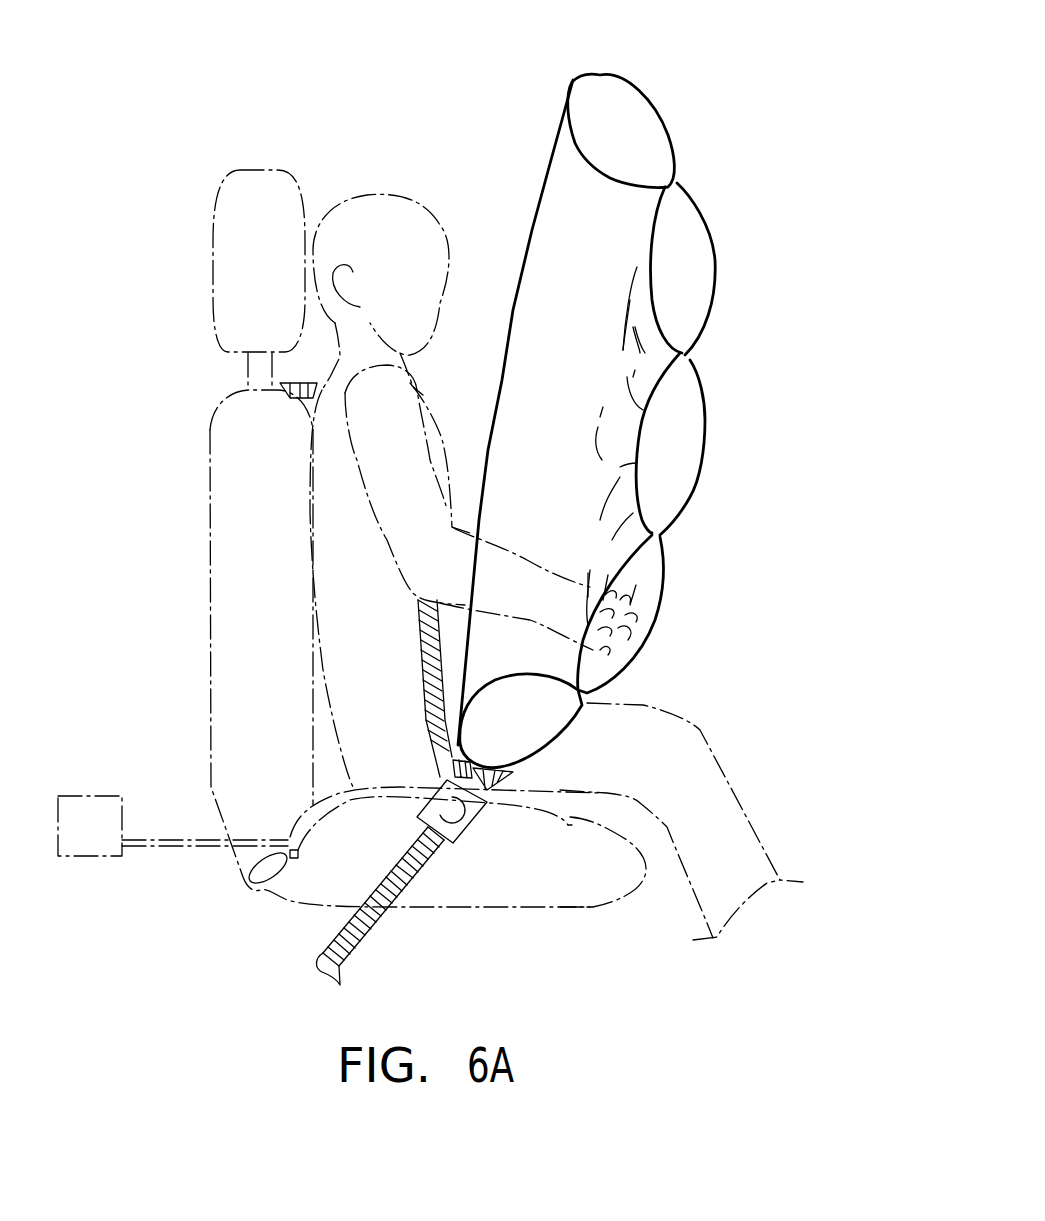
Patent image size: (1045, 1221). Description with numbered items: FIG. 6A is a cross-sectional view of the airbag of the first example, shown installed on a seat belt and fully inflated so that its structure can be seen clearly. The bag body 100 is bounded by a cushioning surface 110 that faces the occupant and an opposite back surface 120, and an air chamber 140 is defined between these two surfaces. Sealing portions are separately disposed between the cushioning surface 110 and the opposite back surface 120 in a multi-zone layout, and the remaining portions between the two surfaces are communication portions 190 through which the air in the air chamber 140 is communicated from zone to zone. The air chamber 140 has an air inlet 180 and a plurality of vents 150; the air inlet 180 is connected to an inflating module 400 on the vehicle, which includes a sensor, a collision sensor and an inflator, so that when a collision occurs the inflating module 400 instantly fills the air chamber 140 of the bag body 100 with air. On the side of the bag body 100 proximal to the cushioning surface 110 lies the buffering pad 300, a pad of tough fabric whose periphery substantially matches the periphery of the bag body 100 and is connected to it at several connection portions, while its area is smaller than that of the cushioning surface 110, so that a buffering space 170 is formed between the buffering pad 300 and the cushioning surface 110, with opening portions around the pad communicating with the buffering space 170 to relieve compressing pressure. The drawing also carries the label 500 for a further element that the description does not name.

The bag body 100 is at (672, 119).
The cushioning surface 110 is at (575, 142).
The opposite back surface 120 is at (638, 90).
The air chamber 140 is at (643, 153).
The vents 150 is at (715, 253).
The buffering space 170 is at (570, 210).
The air inlet 180 is at (570, 825).
The communication portions 190 is at (623, 360).
The buffering pad 300 is at (512, 313).
The inflating module 400 is at (90, 796).
The seat 500 is at (357, 190).